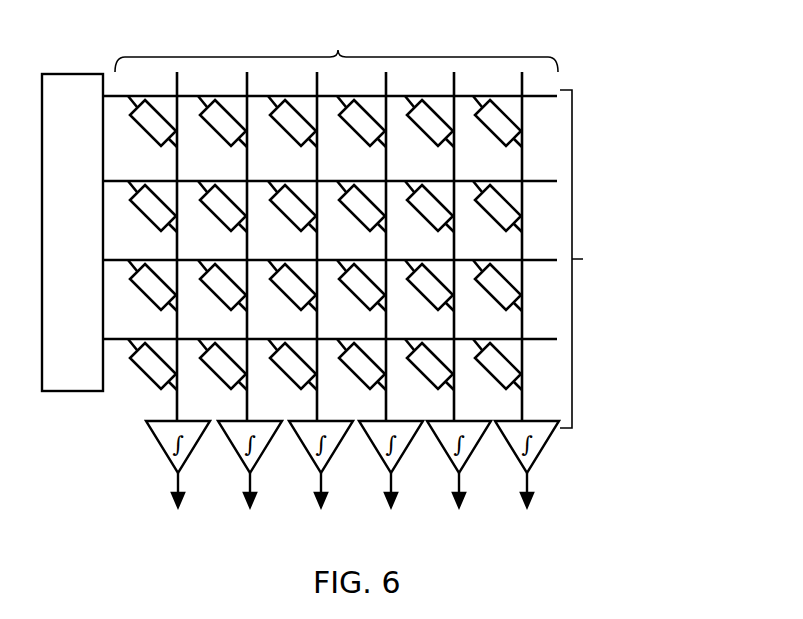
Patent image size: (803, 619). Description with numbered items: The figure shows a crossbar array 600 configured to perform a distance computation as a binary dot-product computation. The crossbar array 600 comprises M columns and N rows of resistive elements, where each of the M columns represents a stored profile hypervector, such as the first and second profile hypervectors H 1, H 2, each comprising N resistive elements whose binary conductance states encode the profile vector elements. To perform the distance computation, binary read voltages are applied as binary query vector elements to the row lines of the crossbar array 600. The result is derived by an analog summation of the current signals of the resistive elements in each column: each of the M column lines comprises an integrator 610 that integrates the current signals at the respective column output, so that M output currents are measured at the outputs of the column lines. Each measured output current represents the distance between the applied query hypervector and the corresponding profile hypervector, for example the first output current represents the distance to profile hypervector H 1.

The crossbar array 600 is at (713, 578).
The integrator 610 is at (162, 443).
The first stored profile hypervector column H1 1 is at (154, 242).
The second stored profile hypervector column H2 2 is at (223, 242).